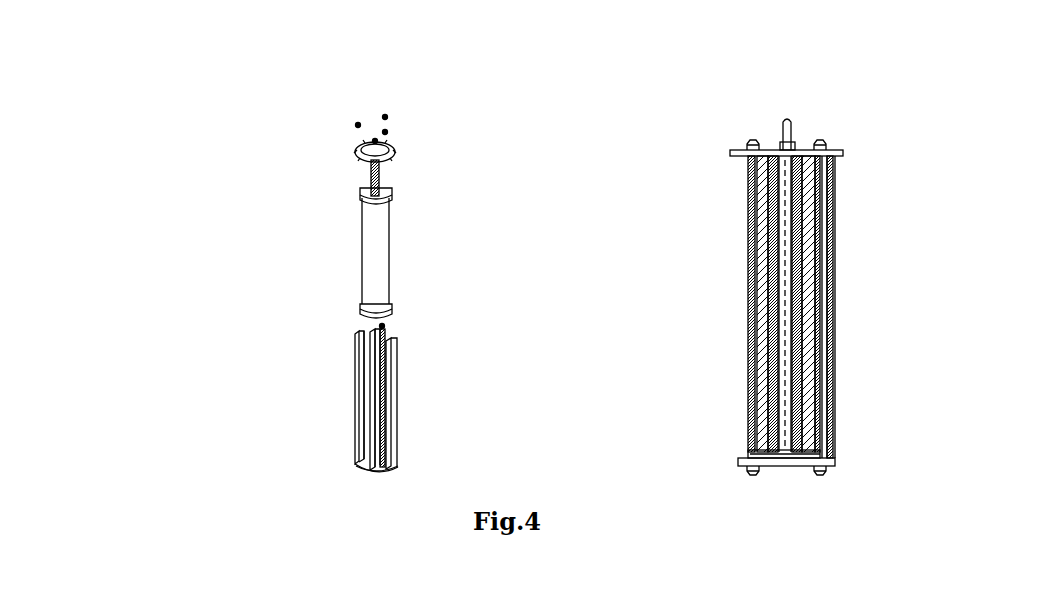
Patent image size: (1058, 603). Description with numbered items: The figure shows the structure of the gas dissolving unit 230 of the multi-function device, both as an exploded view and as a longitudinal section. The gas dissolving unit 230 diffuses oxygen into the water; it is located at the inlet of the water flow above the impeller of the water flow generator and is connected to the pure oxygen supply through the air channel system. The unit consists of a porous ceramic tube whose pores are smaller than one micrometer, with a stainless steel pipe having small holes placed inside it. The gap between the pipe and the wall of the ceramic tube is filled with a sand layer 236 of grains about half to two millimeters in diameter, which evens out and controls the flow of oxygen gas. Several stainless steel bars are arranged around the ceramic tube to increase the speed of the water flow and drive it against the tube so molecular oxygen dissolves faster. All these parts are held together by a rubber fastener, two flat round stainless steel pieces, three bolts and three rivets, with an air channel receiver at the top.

The gas dissolving unit 230 is at (243, 121).
The sand layer 236 is at (770, 323).